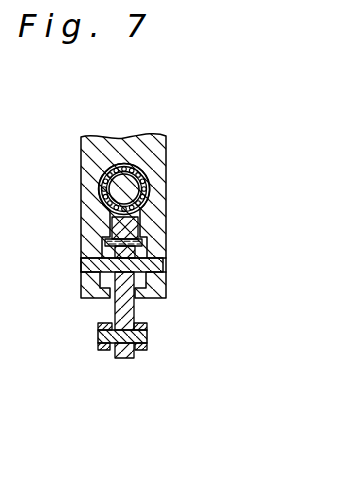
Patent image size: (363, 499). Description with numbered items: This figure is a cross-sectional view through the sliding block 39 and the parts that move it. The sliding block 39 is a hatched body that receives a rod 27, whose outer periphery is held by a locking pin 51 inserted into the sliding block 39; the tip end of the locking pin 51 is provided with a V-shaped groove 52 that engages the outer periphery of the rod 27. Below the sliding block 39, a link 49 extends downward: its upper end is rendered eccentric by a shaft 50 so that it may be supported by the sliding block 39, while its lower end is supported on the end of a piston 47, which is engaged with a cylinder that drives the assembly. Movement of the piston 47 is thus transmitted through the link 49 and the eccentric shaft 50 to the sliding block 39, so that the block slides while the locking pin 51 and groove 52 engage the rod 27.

The sliding block 39 is at (163, 144).
The rod 27 is at (149, 188).
The V-shaped groove 52 is at (106, 229).
The locking pin 51 is at (145, 237).
The shaft 50 is at (157, 262).
The link 49 is at (121, 310).
The piston 47 is at (146, 337).